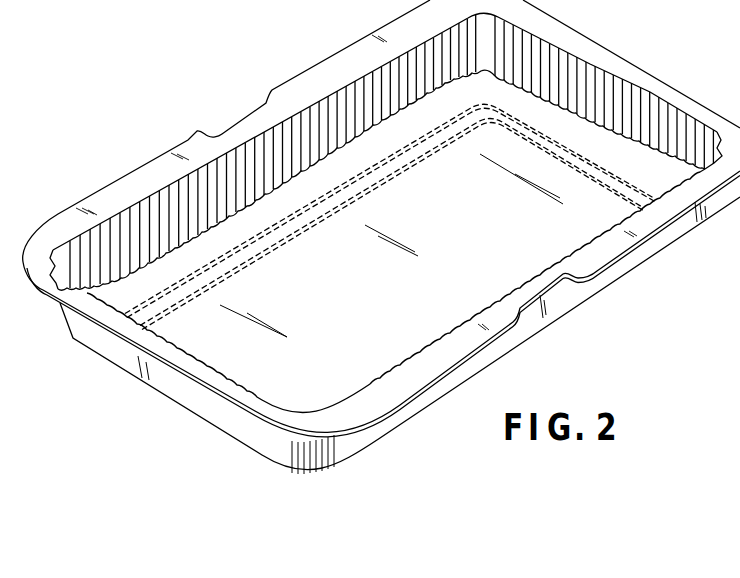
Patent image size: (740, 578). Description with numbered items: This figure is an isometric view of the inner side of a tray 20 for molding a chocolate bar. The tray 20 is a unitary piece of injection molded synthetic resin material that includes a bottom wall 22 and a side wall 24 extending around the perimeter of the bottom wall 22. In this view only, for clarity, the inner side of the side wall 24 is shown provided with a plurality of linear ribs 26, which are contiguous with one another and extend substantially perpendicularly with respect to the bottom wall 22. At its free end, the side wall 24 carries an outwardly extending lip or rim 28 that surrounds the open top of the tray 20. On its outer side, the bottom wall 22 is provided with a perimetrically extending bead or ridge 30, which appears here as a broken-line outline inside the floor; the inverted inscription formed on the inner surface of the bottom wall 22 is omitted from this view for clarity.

The tray 20 is at (381, 237).
The bottom wall 22 is at (376, 350).
The side wall 24 is at (113, 247).
The linear ribs 26 is at (343, 90).
The lip or rim 28 is at (143, 173).
The bead or ridge 30 is at (157, 323).